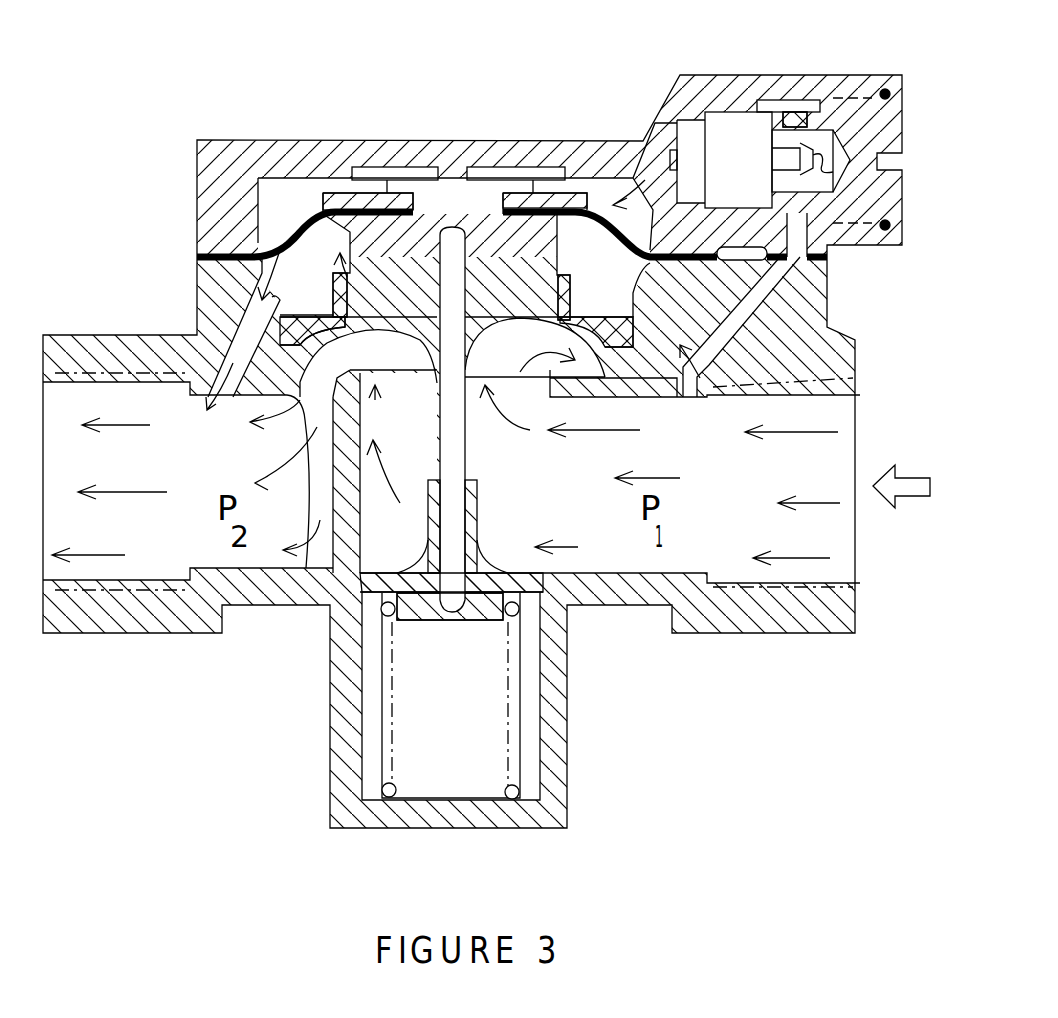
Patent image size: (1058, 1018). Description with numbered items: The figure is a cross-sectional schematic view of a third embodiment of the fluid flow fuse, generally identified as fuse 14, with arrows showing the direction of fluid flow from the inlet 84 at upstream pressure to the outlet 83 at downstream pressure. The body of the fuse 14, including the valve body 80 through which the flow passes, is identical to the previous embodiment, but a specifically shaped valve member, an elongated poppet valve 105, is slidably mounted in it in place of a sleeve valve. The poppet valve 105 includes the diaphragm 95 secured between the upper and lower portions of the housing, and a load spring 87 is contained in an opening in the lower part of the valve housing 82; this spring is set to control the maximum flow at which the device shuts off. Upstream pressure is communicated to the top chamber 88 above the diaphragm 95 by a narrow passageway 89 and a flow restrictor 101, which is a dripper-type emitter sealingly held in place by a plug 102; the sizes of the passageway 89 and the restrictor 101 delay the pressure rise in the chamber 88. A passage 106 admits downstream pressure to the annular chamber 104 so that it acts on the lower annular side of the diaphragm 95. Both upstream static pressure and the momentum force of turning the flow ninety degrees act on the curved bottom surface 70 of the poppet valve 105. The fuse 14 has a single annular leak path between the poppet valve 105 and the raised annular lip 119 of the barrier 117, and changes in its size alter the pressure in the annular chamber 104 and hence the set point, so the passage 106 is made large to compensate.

The fluid flow fuse 14 is at (205, 768).
The curved bottom surface 70 is at (370, 357).
The valve body 80 is at (192, 328).
The valve housing 82 is at (603, 607).
The outlet 83 is at (42, 632).
The inlet 84 is at (853, 627).
The load spring 87 is at (520, 690).
The top chamber 88 is at (553, 182).
The narrow passageway 89 is at (849, 286).
The diaphragm 95 is at (303, 258).
The flow restrictor 101 is at (742, 157).
The plug 102 is at (903, 110).
The annular chamber 104 is at (307, 200).
The poppet valve 105 is at (705, 400).
The passage 106 is at (263, 317).
The barrier 117 is at (570, 279).
The raised annular lip 119 is at (633, 297).